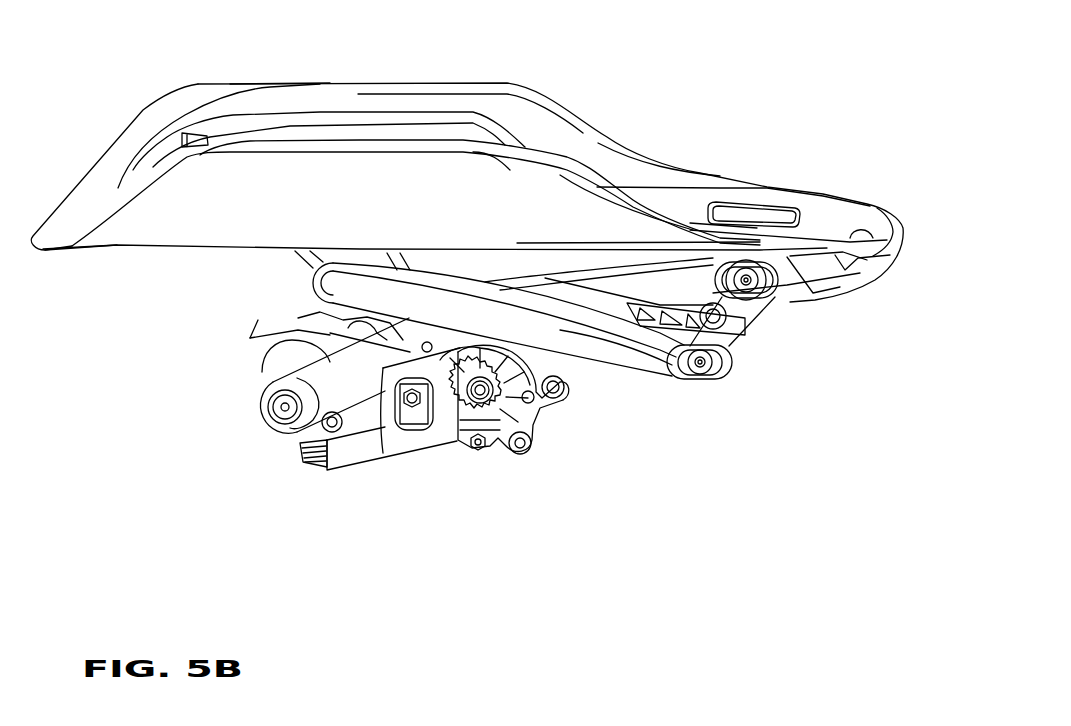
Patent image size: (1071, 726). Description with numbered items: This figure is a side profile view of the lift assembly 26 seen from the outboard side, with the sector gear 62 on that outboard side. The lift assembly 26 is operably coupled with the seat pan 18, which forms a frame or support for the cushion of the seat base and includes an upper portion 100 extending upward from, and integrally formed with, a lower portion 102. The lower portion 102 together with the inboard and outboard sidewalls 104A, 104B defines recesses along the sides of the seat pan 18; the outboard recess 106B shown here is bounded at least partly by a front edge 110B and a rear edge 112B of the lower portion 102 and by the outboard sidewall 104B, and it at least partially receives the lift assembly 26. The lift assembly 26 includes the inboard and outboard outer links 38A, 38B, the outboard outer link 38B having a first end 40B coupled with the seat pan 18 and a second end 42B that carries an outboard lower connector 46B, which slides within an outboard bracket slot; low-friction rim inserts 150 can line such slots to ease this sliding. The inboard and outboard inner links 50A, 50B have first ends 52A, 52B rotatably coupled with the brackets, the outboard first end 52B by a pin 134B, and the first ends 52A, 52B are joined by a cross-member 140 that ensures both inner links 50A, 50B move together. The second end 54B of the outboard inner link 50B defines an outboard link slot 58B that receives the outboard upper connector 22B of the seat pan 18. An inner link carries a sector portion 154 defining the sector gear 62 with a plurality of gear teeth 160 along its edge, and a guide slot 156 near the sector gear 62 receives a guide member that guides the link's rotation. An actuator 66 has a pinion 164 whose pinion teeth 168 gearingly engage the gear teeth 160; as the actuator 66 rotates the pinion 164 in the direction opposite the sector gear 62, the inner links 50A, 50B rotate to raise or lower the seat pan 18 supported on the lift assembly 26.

The lift assembly 26 is at (716, 38).
The seat pan 18 is at (348, 163).
The upper portion 100 is at (202, 195).
The inboard sidewall 104A is at (245, 88).
The outboard sidewall 104B is at (500, 170).
The outboard recess 106B is at (537, 266).
The front edge 110B is at (290, 253).
The rear edge 112B is at (795, 270).
The lower portion 102 is at (278, 270).
The first end 40B is at (337, 283).
The inboard outer link 38A is at (663, 313).
The outboard outer link 38B is at (635, 347).
The outboard upper connector 22B is at (745, 278).
The outboard link slot 58B is at (722, 270).
The second end 54B is at (770, 300).
The low-friction rim inserts 150 is at (773, 262).
The second end 42B is at (733, 340).
The outboard lower connector 46B is at (700, 363).
The inboard inner link 50A is at (323, 325).
The first end 52A is at (287, 335).
The cross-member 140 is at (290, 358).
The pin 134B is at (287, 407).
The first end 52B is at (293, 423).
The actuator 66 is at (343, 473).
The sector gear 62 is at (342, 453).
The outboard inner link 50B is at (387, 357).
The sector portion 154 is at (372, 418).
The guide slot 156 is at (408, 420).
The gear teeth 160 is at (448, 435).
The pinion 164 is at (487, 393).
The pinion teeth 168 is at (478, 440).